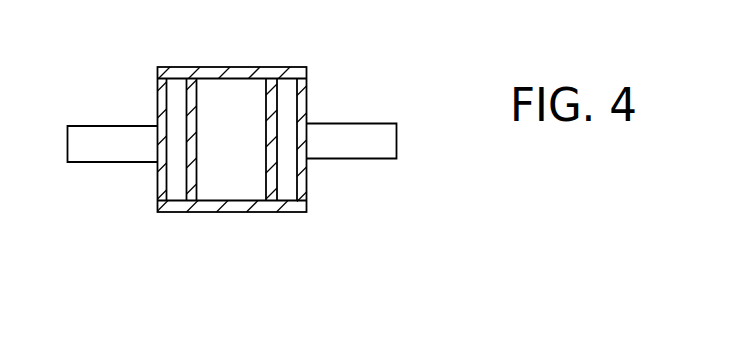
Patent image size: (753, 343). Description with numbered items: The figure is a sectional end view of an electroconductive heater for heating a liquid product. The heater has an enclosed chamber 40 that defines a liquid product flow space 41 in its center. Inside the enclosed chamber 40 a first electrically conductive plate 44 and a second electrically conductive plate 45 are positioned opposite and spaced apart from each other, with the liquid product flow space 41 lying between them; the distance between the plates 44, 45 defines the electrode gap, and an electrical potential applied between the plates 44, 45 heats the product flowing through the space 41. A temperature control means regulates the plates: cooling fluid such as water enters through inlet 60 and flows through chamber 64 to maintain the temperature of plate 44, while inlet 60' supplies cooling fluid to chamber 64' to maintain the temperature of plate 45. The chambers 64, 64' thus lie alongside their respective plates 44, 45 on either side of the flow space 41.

The enclosed chamber 40 is at (227, 67).
The liquid product flow space 41 is at (247, 185).
The first electrically conductive plate 44 is at (192, 108).
The second electrically conductive plate 45 is at (278, 83).
The inlet 60 is at (92, 184).
The inlet 60' is at (391, 110).
The chamber 64 is at (128, 178).
The chamber 64' is at (364, 157).